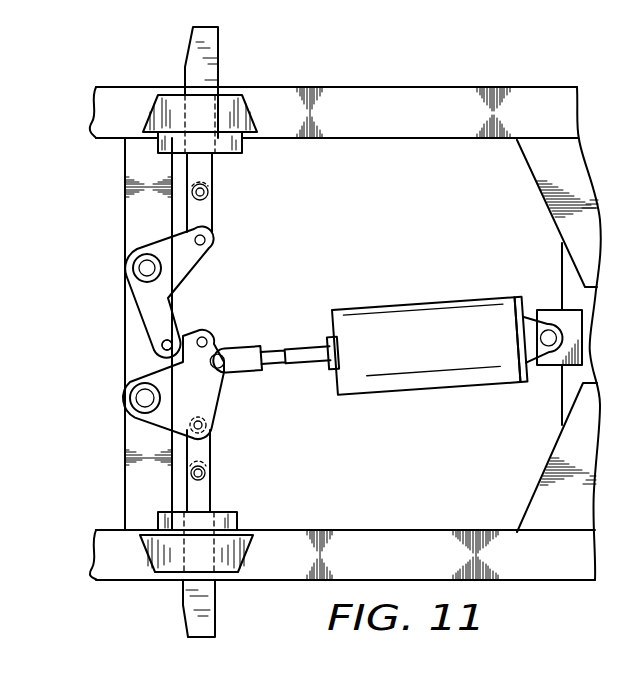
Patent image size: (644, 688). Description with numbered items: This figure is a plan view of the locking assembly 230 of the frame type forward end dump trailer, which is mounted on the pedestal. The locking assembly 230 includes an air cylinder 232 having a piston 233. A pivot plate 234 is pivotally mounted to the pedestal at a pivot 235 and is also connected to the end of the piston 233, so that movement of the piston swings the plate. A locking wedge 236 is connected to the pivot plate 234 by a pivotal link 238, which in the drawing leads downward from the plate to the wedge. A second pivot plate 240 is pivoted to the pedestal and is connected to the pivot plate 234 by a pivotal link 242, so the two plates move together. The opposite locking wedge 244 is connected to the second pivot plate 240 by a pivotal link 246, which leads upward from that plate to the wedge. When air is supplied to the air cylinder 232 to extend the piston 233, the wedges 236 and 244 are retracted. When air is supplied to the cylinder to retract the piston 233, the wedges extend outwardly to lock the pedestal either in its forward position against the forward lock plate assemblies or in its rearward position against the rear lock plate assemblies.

The locking assembly 230 is at (393, 334).
The air cylinder 232 is at (428, 308).
The piston 233 is at (293, 367).
The pivot plate 234 is at (217, 410).
The pivot 235 is at (140, 388).
The locking wedge 236 is at (212, 620).
The pivotal link 238 is at (210, 453).
The second pivot plate 240 is at (158, 245).
The pivotal link 242 is at (183, 332).
The opposite locking wedge 244 is at (218, 42).
The pivotal link 246 is at (213, 215).